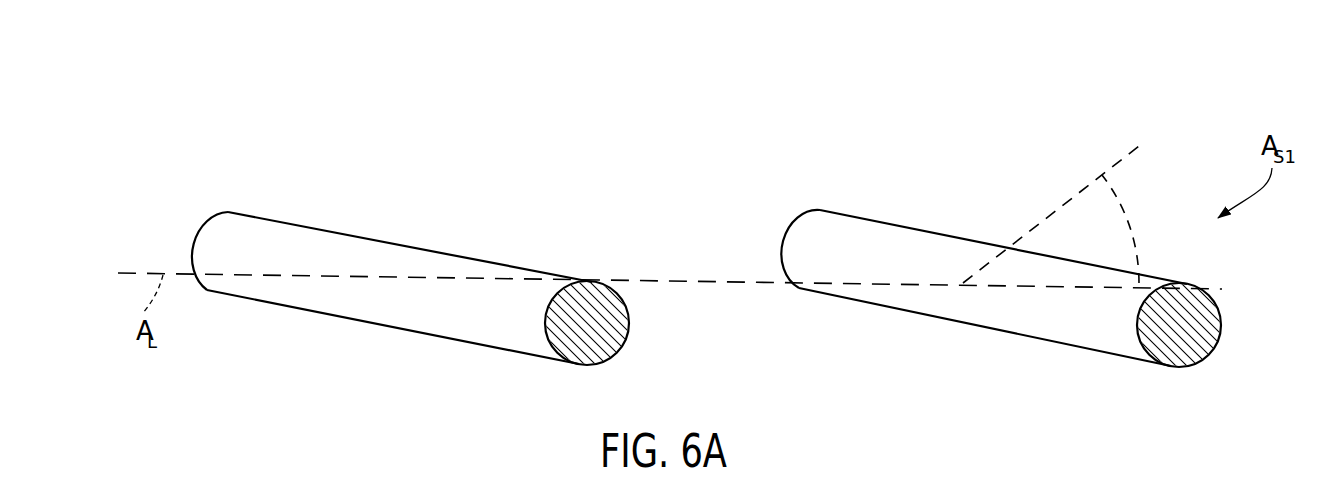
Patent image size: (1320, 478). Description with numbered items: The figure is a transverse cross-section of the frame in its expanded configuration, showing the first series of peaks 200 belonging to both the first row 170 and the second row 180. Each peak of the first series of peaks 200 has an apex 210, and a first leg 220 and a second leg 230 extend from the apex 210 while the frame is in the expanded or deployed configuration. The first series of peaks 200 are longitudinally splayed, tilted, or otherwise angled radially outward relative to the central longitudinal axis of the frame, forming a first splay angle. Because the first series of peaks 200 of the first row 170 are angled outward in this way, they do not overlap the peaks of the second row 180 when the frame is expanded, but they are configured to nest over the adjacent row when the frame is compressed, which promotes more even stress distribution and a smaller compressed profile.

The first row 170 is at (998, 226).
The second row 180 is at (183, 176).
The first series of peaks 200 is at (678, 226).
The apex 210 is at (940, 254).
The first leg 220 is at (1063, 328).
The second leg 230 is at (835, 233).